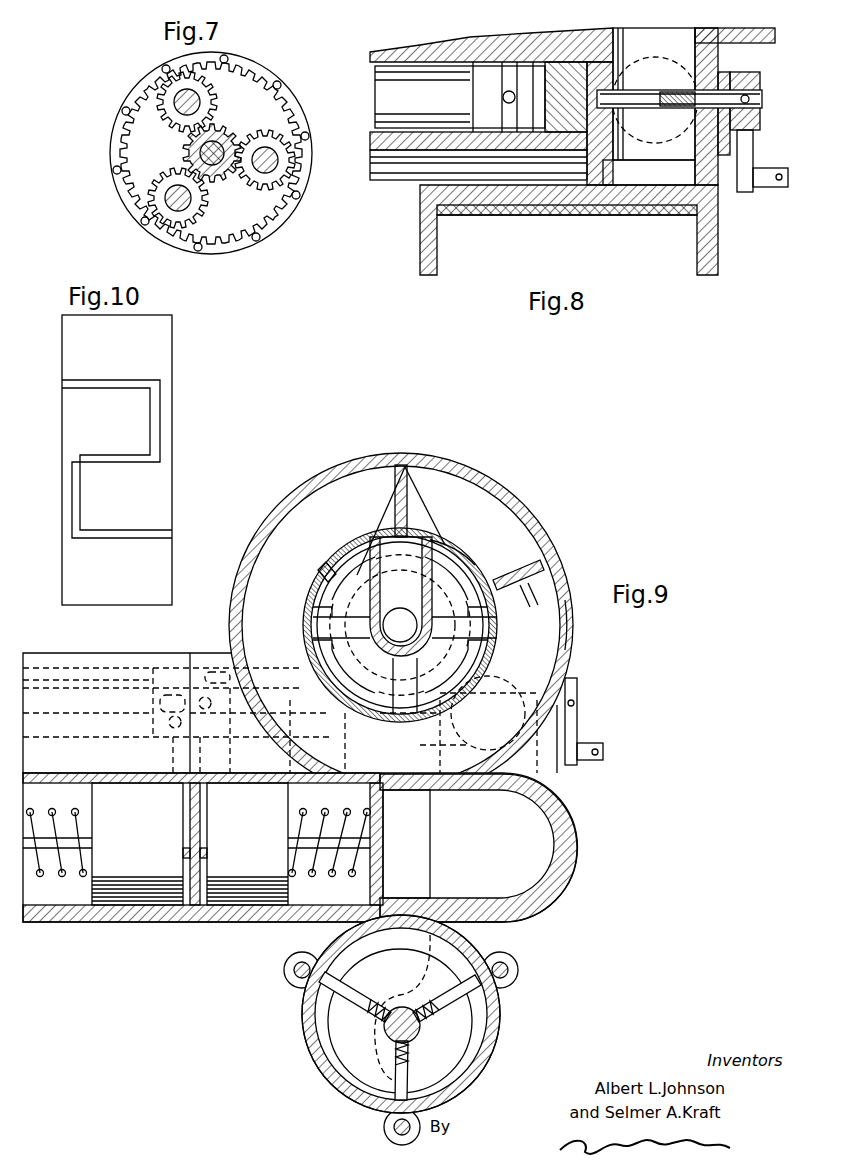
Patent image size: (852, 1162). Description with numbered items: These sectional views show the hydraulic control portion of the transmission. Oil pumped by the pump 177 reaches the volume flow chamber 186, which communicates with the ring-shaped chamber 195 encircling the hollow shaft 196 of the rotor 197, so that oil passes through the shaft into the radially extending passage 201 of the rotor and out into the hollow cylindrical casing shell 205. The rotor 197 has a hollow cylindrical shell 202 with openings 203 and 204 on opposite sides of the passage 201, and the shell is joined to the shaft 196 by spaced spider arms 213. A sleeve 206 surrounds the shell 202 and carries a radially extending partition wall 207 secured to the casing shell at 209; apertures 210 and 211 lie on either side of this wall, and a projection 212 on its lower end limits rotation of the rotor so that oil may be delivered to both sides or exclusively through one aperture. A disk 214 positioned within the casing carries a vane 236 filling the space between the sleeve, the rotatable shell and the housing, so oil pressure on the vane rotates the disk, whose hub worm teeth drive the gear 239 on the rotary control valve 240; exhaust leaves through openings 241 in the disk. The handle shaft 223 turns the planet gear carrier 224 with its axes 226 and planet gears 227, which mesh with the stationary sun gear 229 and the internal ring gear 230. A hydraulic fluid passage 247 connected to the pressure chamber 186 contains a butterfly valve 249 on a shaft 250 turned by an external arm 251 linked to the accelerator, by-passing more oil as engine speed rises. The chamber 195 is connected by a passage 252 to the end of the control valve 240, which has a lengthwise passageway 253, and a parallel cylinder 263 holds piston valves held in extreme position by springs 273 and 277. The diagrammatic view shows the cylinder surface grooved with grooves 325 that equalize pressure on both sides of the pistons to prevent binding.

In FIG. 9, the pump 177 is at (335, 1047).
In FIG. 8, the volume flow chamber 186 is at (652, 182).
In FIG. 9, the ring-shaped chamber 195 is at (418, 860).
In FIG. 9, the hollow shaft 196 is at (322, 661).
In FIG. 9, the rotor 197 is at (401, 596).
In FIG. 9, the radially extending passage 201 is at (410, 587).
In FIG. 9, the hollow cylindrical shell 202 is at (320, 577).
In FIG. 9, the opening 203 is at (345, 547).
In FIG. 9, the opening 204 is at (455, 548).
In FIG. 9, the hollow cylindrical casing shell 205 is at (490, 483).
In FIG. 9, the sleeve 206 is at (498, 646).
In FIG. 9, the radially extending partition wall 207 is at (395, 494).
In FIG. 9, the securing point 209 is at (398, 463).
In FIG. 9, the aperture 210 is at (388, 531).
In FIG. 9, the aperture 211 is at (422, 540).
In FIG. 9, the projection 212 is at (407, 535).
In FIG. 9, the spider arms 213 is at (313, 623).
In FIG. 9, the disk 214 is at (563, 631).
In FIG. 7, the shaft 223 is at (203, 157).
In FIG. 7, the planet gear carrier 224 is at (145, 127).
In FIG. 7, the axes 226 is at (257, 150).
In FIG. 7, the planet gears 227 is at (170, 95).
In FIG. 7, the sun gear 229 is at (193, 142).
In FIG. 7, the internal ring gear 230 is at (265, 218).
In FIG. 9, the vane 236 is at (540, 558).
In FIG. 8, the gear 239 is at (565, 75).
In FIG. 8, the rotary control valve 240 is at (483, 72).
In FIG. 9, the rotary control valve 240 is at (50, 676).
In FIG. 9, the openings 241 is at (498, 608).
In FIG. 8, the hydraulic fluid passage 247 is at (640, 33).
In FIG. 8, the butterfly valve 249 is at (650, 97).
In FIG. 8, the shaft 250 is at (722, 95).
In FIG. 8, the arm 251 is at (745, 190).
In FIG. 9, the arm 251 is at (577, 735).
In FIG. 9, the passage 252 is at (458, 787).
In FIG. 9, the passageway 253 is at (108, 685).
In FIG. 9, the cylinder 263 is at (120, 908).
In FIG. 9, the spring 273 is at (343, 815).
In FIG. 9, the spring 277 is at (45, 868).
In FIG. 10, the grooves 325 is at (160, 414).